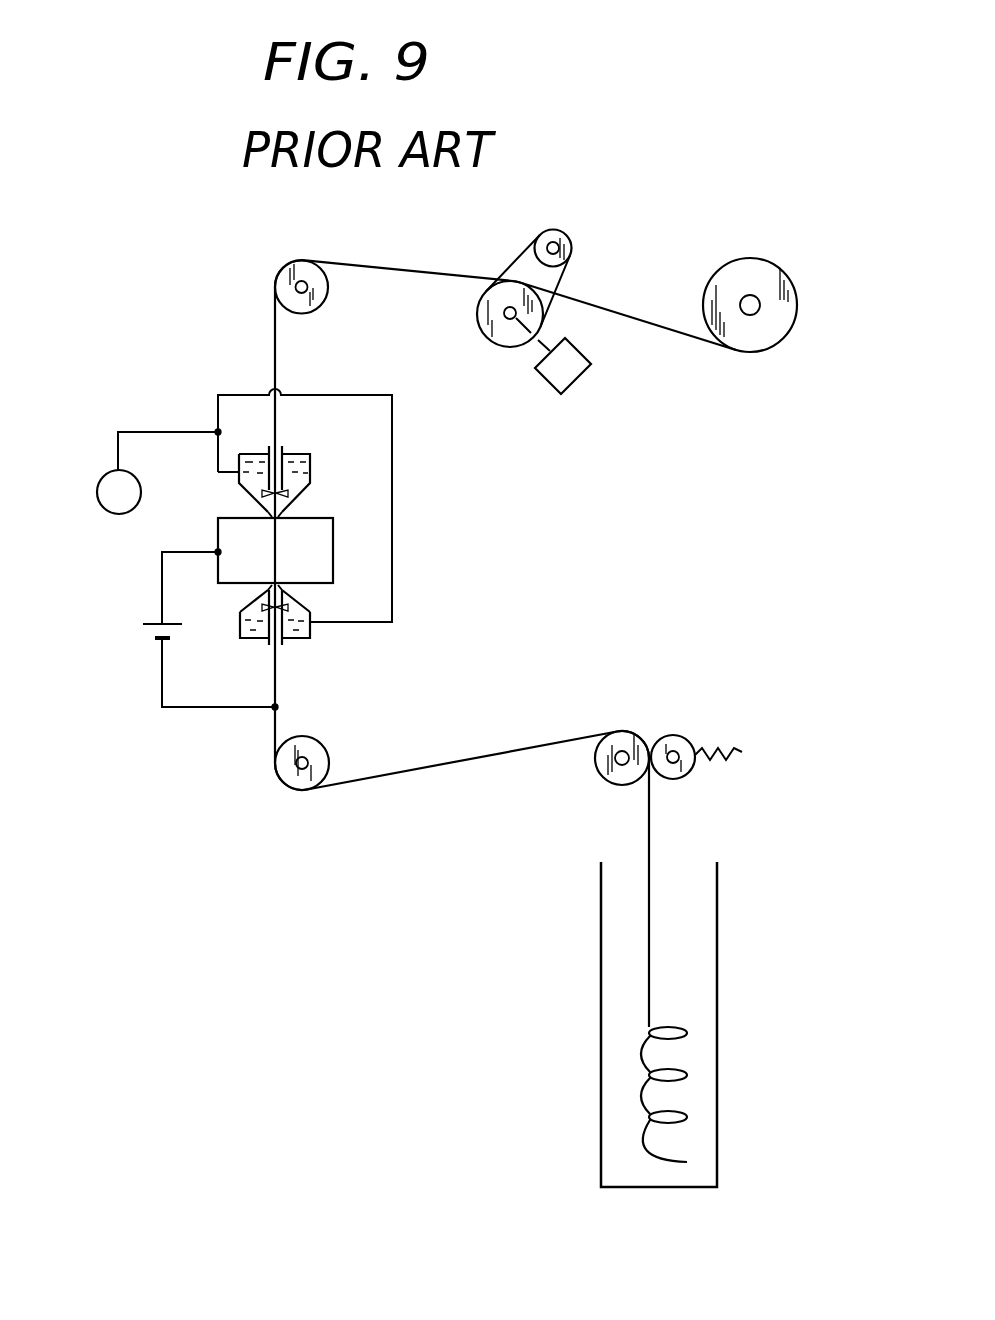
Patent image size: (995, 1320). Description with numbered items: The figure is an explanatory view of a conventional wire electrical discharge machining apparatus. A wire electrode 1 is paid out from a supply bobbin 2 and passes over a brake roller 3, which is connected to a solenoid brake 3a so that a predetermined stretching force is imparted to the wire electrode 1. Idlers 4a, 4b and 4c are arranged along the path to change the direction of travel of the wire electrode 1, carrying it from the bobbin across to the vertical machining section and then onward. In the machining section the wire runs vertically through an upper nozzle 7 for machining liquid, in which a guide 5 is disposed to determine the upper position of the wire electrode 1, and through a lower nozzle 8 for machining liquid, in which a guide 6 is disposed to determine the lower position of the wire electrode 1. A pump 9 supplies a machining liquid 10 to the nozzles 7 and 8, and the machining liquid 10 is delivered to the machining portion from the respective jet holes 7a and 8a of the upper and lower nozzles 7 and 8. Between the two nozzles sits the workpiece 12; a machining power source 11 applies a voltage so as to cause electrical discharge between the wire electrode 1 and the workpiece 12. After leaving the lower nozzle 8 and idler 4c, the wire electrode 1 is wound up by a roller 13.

The wire electrode 1 is at (667, 332).
The supply bobbin 2 is at (745, 258).
The brake roller 3 is at (485, 338).
The solenoid brake 3a is at (553, 381).
The idler 4a is at (572, 248).
The idler 4b is at (325, 300).
The idler 4c is at (328, 752).
The guide 5 is at (288, 508).
The guide 6 is at (288, 632).
The upper nozzle 7 is at (262, 503).
The jet hole 7a is at (285, 513).
The lower nozzle 8 is at (240, 628).
The jet hole 8a is at (266, 590).
The pump 9 is at (121, 515).
The machining liquid 10 is at (262, 448).
The machining power source 11 is at (142, 638).
The workpiece 12 is at (334, 553).
The roller 13 is at (607, 783).